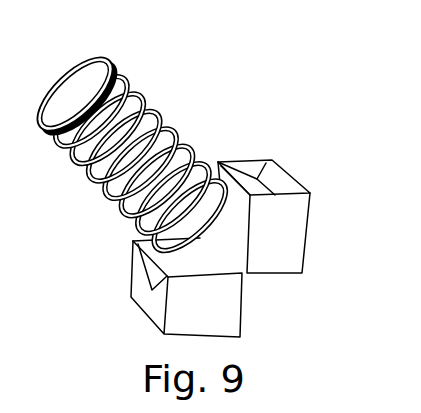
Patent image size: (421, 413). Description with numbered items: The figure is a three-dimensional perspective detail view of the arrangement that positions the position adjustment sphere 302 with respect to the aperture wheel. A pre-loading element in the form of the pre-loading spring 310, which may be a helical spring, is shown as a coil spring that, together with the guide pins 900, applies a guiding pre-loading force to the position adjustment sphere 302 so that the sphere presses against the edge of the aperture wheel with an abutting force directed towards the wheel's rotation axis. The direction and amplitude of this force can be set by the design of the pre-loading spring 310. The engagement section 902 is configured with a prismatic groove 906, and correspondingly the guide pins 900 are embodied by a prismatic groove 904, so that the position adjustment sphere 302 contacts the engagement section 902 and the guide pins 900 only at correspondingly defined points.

The pre-loading spring 310 is at (174, 170).
The position adjustment sphere 302 is at (216, 252).
The guide pins 900 is at (147, 296).
The prismatic groove 904 is at (152, 287).
The engagement section 902 is at (255, 183).
The prismatic groove 906 is at (255, 178).